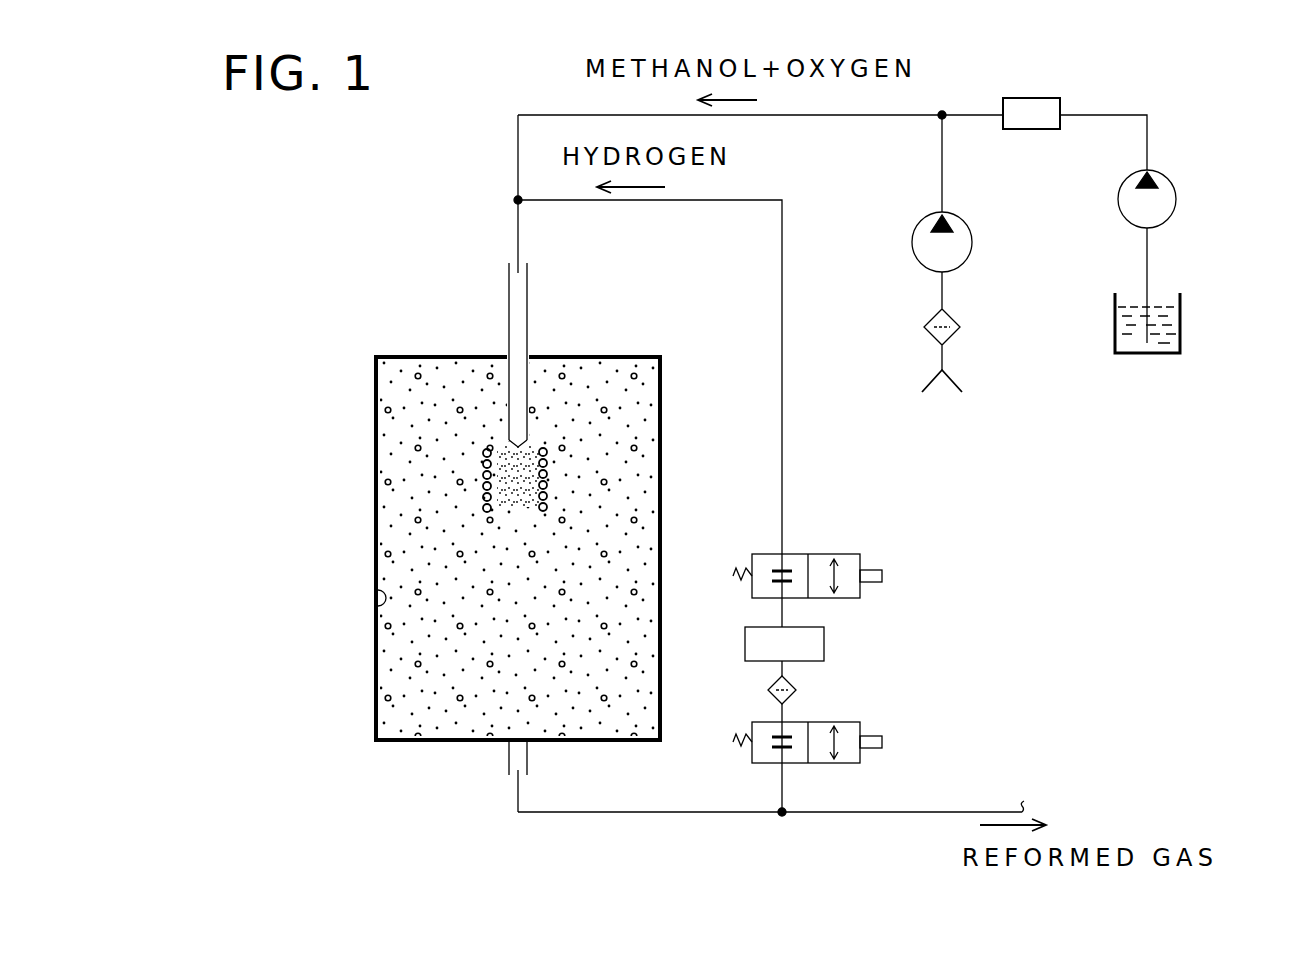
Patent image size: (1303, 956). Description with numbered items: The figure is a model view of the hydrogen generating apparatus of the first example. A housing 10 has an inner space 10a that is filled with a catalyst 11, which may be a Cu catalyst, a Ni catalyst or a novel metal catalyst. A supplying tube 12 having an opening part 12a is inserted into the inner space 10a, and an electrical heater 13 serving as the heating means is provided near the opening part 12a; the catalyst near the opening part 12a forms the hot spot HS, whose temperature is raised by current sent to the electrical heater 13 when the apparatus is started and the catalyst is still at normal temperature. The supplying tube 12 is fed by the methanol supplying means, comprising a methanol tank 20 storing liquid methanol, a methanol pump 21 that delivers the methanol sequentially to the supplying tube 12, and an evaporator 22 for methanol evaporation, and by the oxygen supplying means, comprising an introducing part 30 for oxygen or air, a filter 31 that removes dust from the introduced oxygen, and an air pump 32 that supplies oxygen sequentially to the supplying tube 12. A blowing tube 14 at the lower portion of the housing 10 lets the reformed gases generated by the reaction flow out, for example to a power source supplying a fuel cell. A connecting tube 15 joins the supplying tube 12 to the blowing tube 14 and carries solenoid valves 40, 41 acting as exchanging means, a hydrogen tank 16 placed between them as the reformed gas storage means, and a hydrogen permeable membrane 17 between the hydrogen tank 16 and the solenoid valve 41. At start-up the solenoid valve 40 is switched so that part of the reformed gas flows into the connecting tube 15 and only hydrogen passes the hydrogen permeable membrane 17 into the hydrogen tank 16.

The housing 10 is at (376, 450).
The inner space 10a is at (376, 607).
The catalyst 11 is at (415, 704).
The supplying tube 12 is at (527, 283).
The opening part 12a is at (512, 440).
The electrical heater 13 is at (483, 452).
The hot spot HS is at (515, 500).
The blowing tube 14 is at (509, 770).
The connecting tube 15 is at (782, 438).
The hydrogen tank 16 is at (824, 640).
The hydrogen permeable membrane 17 is at (796, 688).
The methanol tank 20 is at (1180, 330).
The methanol pump 21 is at (1176, 198).
The evaporator 22 is at (1043, 105).
The introducing part 30 is at (960, 388).
The filter 31 is at (960, 320).
The air pump 32 is at (972, 242).
The solenoid valve 40 is at (853, 554).
The solenoid valve 41 is at (860, 722).